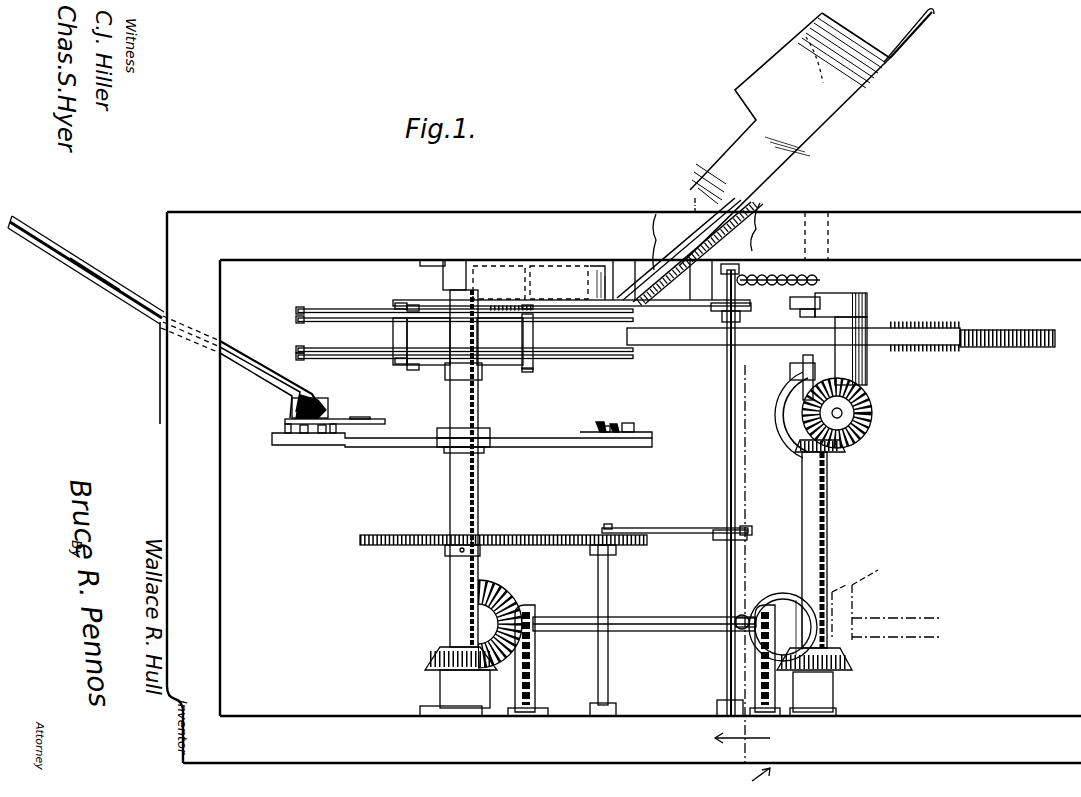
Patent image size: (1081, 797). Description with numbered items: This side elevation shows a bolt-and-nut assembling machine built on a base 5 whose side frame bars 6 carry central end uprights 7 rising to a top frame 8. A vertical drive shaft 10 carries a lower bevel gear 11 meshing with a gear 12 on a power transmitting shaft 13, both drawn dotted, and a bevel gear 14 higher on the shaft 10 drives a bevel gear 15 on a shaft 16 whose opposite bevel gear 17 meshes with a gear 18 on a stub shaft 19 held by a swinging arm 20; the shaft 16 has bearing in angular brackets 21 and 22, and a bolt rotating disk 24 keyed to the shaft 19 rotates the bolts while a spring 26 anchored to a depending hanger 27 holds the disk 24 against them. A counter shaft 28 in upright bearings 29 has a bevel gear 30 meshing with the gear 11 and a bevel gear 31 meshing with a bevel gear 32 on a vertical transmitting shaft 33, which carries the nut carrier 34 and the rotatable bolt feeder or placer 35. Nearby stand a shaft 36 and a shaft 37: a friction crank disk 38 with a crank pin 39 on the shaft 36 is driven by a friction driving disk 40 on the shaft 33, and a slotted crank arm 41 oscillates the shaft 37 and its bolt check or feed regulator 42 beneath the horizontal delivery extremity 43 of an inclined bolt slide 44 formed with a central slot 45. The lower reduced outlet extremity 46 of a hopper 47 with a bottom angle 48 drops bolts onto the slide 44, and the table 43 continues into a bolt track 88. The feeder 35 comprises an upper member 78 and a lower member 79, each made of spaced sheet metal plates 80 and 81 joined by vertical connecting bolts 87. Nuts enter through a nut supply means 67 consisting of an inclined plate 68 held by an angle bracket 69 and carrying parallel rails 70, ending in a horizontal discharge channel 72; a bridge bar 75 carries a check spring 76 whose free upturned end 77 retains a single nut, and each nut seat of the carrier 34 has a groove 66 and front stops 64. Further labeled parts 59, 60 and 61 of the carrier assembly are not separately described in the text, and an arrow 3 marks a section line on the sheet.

The section line 3 is at (731, 481).
The base 5 is at (751, 779).
The side frame bars 6 is at (916, 716).
The central end uprights 7 is at (216, 540).
The top frame 8 is at (940, 212).
The vertical drive shaft 10 is at (830, 548).
The lower bevel gear 11 is at (840, 672).
The gear 12 is at (858, 590).
The power transmitting shaft 13 is at (896, 618).
The bevel gear 14 is at (800, 450).
The bevel gear 15 is at (790, 422).
The shaft 16 is at (844, 414).
The bevel gear 17 is at (870, 430).
The gear 18 is at (862, 388).
The stub shaft 19 is at (858, 370).
The swinging arm 20 is at (870, 306).
The angular bracket 21 is at (790, 366).
The angular bracket 22 is at (803, 384).
The bolt rotating disk 24 is at (1018, 348).
The spring 26 is at (830, 260).
The depending hanger 27 is at (764, 260).
The counter shaft 28 is at (670, 617).
The upright bearings 29 is at (537, 680).
The bevel gear 30 is at (781, 592).
The bevel gear 31 is at (516, 596).
The bevel gear 32 is at (426, 660).
The vertical transmitting shaft 33 is at (450, 612).
The nut carrier 34 is at (514, 452).
The rotatable bolt feeder or placer 35 is at (428, 337).
The shaft 36 is at (610, 582).
The shaft 37 is at (726, 472).
The friction crank disk 38 is at (650, 542).
The crank pin 39 is at (616, 526).
The friction driving disk 40 is at (522, 535).
The crank arm 41 is at (700, 528).
The bolt check or feed regulator 42 is at (709, 490).
The horizontal delivery extremity 43 is at (571, 292).
The inclined bolt slide or delivery plate 44 is at (684, 213).
The central slot 45 is at (676, 294).
The lower reduced outlet extremity 46 is at (708, 166).
The hopper 47 is at (826, 108).
The bottom angle 48 is at (793, 153).
The base plate 59 is at (296, 447).
The hub 60 is at (664, 436).
The stud 61 is at (306, 445).
The front stops 64 is at (596, 427).
The groove 66 is at (280, 435).
The nut supply means 67 is at (118, 284).
The inclined plate 68 is at (30, 250).
The angle bracket 69 is at (158, 340).
The parallel rails 70 is at (48, 240).
The horizontal discharge channel 72 is at (386, 422).
The bridge bar 75 is at (272, 402).
The check spring 76 is at (300, 396).
The free upturned end 77 is at (330, 416).
The upper member 78 is at (360, 310).
The lower member 79 is at (336, 360).
The sheet metal plate 80 is at (320, 309).
The sheet metal plate 81 is at (304, 322).
The vertical connecting bolts 87 is at (394, 338).
The bolt track 88 is at (574, 266).